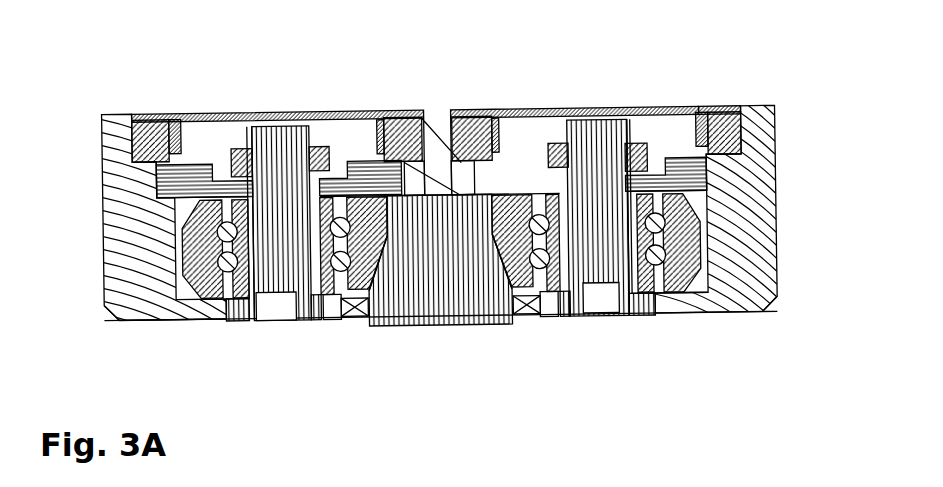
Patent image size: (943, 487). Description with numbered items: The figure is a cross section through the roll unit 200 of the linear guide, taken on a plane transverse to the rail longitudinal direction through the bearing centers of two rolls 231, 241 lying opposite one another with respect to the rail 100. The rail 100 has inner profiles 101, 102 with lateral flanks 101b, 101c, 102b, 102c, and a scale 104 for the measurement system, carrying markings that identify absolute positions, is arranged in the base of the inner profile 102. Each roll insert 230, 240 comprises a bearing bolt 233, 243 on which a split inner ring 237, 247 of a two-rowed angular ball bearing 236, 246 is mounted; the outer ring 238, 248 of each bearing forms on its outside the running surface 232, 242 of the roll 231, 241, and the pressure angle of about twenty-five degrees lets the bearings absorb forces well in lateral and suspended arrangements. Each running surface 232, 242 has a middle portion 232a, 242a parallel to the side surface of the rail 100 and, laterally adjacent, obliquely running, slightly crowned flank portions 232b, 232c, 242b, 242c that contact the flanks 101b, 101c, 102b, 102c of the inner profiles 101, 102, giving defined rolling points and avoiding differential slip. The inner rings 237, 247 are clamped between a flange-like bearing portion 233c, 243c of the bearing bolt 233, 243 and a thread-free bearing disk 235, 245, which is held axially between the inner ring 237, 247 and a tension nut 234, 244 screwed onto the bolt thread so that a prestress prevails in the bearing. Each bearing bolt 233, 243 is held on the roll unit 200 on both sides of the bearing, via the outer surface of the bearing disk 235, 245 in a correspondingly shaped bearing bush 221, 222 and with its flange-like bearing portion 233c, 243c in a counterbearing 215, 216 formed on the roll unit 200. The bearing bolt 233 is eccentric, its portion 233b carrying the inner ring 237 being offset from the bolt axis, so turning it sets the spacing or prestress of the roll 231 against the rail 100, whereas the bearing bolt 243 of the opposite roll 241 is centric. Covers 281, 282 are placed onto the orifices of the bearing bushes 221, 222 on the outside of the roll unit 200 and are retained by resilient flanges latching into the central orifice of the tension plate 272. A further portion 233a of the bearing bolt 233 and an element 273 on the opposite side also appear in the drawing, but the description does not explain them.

The rail 100 is at (443, 325).
The inner profile 101 is at (372, 125).
The flank 101b is at (393, 242).
The flank 101c is at (423, 112).
The inner profile 102 is at (510, 112).
The flank 102b is at (533, 112).
The flank 102c is at (473, 282).
The scale 104 is at (478, 112).
The roll unit 200 is at (745, 377).
The counterbearing 215 is at (342, 322).
The counterbearing 216 is at (543, 322).
The bearing bush 221 is at (100, 117).
The bearing bush 222 is at (750, 113).
The roll insert 230 is at (275, 366).
The roll 231 is at (183, 320).
The running surface 232 is at (110, 170).
The middle portion 232a is at (150, 240).
The flank portion 232b is at (160, 318).
The flank portion 232c is at (165, 115).
The bearing bolt 233 is at (283, 115).
The first core upper yoke 233a is at (268, 115).
The portion of circular cross section 233b is at (288, 318).
The flange-like bearing portion 233c is at (235, 320).
The tension nut 234 is at (233, 118).
The bearing disk 235 is at (338, 116).
The angular ball bearing 236 is at (120, 275).
The inner ring 237 is at (377, 327).
The outer ring 238 is at (115, 210).
The roll insert 240 is at (612, 330).
The roll 241 is at (695, 320).
The running surface 242 is at (777, 152).
The middle portion 242a is at (760, 228).
The flank portion 242b is at (777, 116).
The flank portion 242c is at (745, 312).
The bearing bolt 243 is at (600, 112).
The flange-like bearing portion 243c is at (640, 320).
The tension nut 244 is at (657, 115).
The bearing disk 245 is at (698, 135).
The angular ball bearing 246 is at (778, 265).
The inner ring 247 is at (530, 323).
The outer ring 248 is at (777, 201).
The tension plate 272 is at (400, 112).
The second coil 273 is at (715, 115).
The cover 281 is at (195, 113).
The cover 282 is at (648, 114).